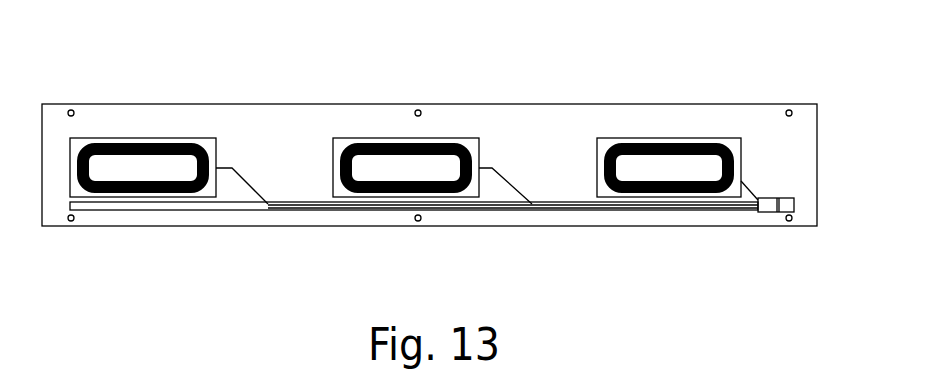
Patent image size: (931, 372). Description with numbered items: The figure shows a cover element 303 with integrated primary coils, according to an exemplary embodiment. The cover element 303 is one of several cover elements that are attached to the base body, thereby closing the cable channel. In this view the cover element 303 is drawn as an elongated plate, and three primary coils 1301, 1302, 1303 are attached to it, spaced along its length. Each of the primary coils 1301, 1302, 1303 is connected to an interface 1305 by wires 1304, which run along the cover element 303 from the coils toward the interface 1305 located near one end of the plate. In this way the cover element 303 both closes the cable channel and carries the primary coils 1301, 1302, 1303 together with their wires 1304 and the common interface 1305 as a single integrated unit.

The cover element 303 is at (550, 137).
The primary coil 1301 is at (137, 148).
The primary coil 1302 is at (385, 142).
The primary coil 1303 is at (672, 140).
The wires 1304 is at (547, 207).
The interface 1305 is at (768, 205).